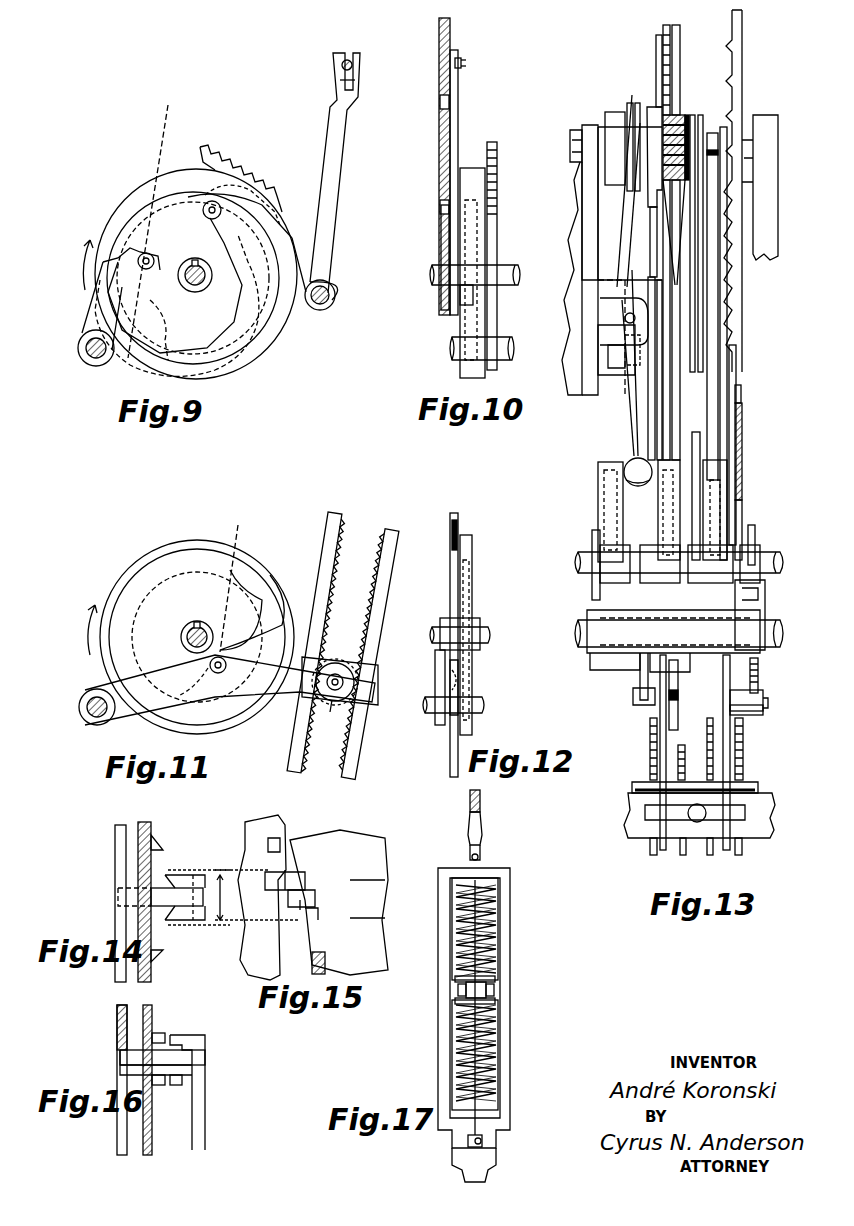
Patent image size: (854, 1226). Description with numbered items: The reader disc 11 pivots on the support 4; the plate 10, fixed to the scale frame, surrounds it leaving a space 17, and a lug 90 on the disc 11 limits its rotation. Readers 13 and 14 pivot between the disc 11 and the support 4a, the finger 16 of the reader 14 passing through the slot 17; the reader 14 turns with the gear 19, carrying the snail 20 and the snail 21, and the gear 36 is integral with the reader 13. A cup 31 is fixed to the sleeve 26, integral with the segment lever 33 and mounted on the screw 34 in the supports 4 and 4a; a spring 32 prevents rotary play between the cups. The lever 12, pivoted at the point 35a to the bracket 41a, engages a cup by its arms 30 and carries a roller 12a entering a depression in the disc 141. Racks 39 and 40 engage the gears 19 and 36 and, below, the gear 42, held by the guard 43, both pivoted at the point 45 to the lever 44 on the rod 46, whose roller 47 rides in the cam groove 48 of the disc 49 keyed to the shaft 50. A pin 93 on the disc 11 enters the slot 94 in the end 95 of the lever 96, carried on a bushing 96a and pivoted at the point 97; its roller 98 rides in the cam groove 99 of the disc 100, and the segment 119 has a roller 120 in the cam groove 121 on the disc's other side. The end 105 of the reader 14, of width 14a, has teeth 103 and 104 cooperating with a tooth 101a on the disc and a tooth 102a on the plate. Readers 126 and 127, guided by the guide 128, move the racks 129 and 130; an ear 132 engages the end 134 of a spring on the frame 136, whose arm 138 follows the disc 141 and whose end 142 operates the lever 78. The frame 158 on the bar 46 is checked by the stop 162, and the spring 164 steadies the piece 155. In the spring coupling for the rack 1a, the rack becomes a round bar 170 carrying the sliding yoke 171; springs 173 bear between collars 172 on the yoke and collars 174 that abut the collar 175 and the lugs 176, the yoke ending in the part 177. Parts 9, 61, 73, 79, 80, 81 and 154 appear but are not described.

In FIG. 17, the rack 1a is at (482, 799).
In FIG. 13, the support 4 is at (766, 120).
In FIG. 13, the support 4a is at (588, 132).
In FIG. 14, the plate 9 is at (116, 850).
In FIG. 16, the plate 9 is at (117, 1022).
In FIG. 10, the plate 10 is at (441, 228).
In FIG. 13, the plate 10 is at (742, 445).
In FIG. 14, the plate 10 is at (140, 872).
In FIG. 15, the plate 10 is at (250, 955).
In FIG. 16, the plate 10 is at (143, 1010).
In FIG. 10, the reader disc 11 is at (440, 77).
In FIG. 13, the reader disc 11 is at (745, 52).
In FIG. 15, the reader disc 11 is at (368, 848).
In FIG. 16, the reader disc 11 is at (143, 1130).
In FIG. 13, the lever 12 is at (634, 438).
In FIG. 13, the roller 12a is at (636, 472).
In FIG. 13, the reader 13 is at (695, 322).
In FIG. 13, the reader 14 is at (704, 301).
In FIG. 15, the reader 14 is at (350, 895).
In FIG. 16, the reader 14 is at (205, 1130).
In FIG. 14, the width 14a is at (230, 897).
In FIG. 14, the finger 16 is at (135, 897).
In FIG. 15, the finger 16 is at (300, 895).
In FIG. 16, the finger 16 is at (135, 1057).
In FIG. 15, the space 17 is at (300, 856).
In FIG. 16, the space 17 is at (140, 1068).
In FIG. 13, the gear 19 is at (668, 120).
In FIG. 13, the snail 20 is at (658, 55).
In FIG. 13, the snail 21 is at (650, 120).
In FIG. 13, the sleeve 26 is at (712, 133).
In FIG. 13, the arms 30 is at (629, 112).
In FIG. 13, the cup 31 is at (612, 118).
In FIG. 13, the spring 32 is at (637, 128).
In FIG. 13, the segment lever 33 is at (722, 410).
In FIG. 13, the screw 34 is at (570, 138).
In FIG. 13, the point 35a is at (626, 316).
In FIG. 13, the gear 36 is at (687, 115).
In FIG. 13, the rack 39 is at (664, 28).
In FIG. 11, the rack 39 is at (394, 528).
In FIG. 12, the rack 39 is at (458, 532).
In FIG. 13, the rack 40 is at (680, 38).
In FIG. 11, the rack 40 is at (334, 514).
In FIG. 12, the rack 40 is at (458, 515).
In FIG. 13, the bracket 41a is at (605, 335).
In FIG. 11, the gear 42 is at (340, 660).
In FIG. 11, the guard 43 is at (378, 690).
In FIG. 12, the guard 43 is at (460, 678).
In FIG. 11, the lever 44 is at (247, 690).
In FIG. 12, the lever 44 is at (437, 662).
In FIG. 11, the point 45 is at (350, 710).
In FIG. 9, the rod 46 is at (88, 338).
In FIG. 10, the rod 46 is at (452, 347).
In FIG. 13, the rod 46 is at (580, 632).
In FIG. 11, the rod 46 is at (88, 715).
In FIG. 12, the rod 46 is at (482, 702).
In FIG. 11, the roller 47 is at (214, 601).
In FIG. 11, the cam groove 48 is at (250, 590).
In FIG. 13, the disc 49 is at (668, 490).
In FIG. 11, the disc 49 is at (135, 572).
In FIG. 12, the disc 49 is at (472, 555).
In FIG. 9, the shaft 50 is at (205, 282).
In FIG. 10, the shaft 50 is at (432, 272).
In FIG. 13, the shaft 50 is at (578, 560).
In FIG. 11, the shaft 50 is at (192, 628).
In FIG. 12, the shaft 50 is at (488, 625).
In FIG. 13, the rod 61 is at (708, 855).
In FIG. 13, the rack 73 is at (758, 672).
In FIG. 13, the lever 78 is at (755, 535).
In FIG. 13, the plate 79 is at (763, 711).
In FIG. 13, the block 80 is at (763, 700).
In FIG. 13, the rod 81 is at (743, 740).
In FIG. 13, the lug 90 is at (740, 392).
In FIG. 9, the pin 93 is at (349, 58).
In FIG. 10, the pin 93 is at (466, 66).
In FIG. 9, the slot 94 is at (342, 70).
In FIG. 9, the end 95 is at (350, 92).
In FIG. 9, the lever 96 is at (242, 226).
In FIG. 10, the lever 96 is at (458, 125).
In FIG. 13, the lever 96 is at (733, 378).
In FIG. 9, the bushing 96a is at (330, 283).
In FIG. 10, the bushing 96a is at (473, 295).
In FIG. 9, the point 97 is at (328, 306).
In FIG. 9, the roller 98 is at (149, 222).
In FIG. 9, the cam groove 99 is at (247, 348).
In FIG. 9, the disc 100 is at (135, 205).
In FIG. 10, the disc 100 is at (470, 180).
In FIG. 13, the disc 100 is at (718, 470).
In FIG. 14, the tooth 101a is at (163, 953).
In FIG. 15, the tooth 101a is at (325, 962).
In FIG. 16, the tooth 101a is at (160, 1085).
In FIG. 14, the tooth 102a is at (163, 850).
In FIG. 15, the tooth 102a is at (272, 840).
In FIG. 16, the tooth 102a is at (158, 1033).
In FIG. 14, the tooth 103 is at (178, 918).
In FIG. 15, the tooth 103 is at (322, 920).
In FIG. 16, the tooth 103 is at (180, 1082).
In FIG. 14, the tooth 104 is at (178, 878).
In FIG. 15, the tooth 104 is at (292, 855).
In FIG. 16, the tooth 104 is at (180, 1037).
In FIG. 14, the end 105 is at (205, 918).
In FIG. 15, the end 105 is at (318, 898).
In FIG. 9, the segment 119 is at (222, 158).
In FIG. 10, the segment 119 is at (497, 196).
In FIG. 13, the segment 119 is at (700, 440).
In FIG. 9, the roller 120 is at (138, 253).
In FIG. 9, the cam groove 121 is at (140, 350).
In FIG. 13, the reader 126 is at (659, 400).
In FIG. 13, the reader 127 is at (650, 388).
In FIG. 13, the guide 128 is at (614, 283).
In FIG. 13, the rack 129 is at (682, 855).
In FIG. 13, the rack 130 is at (650, 855).
In FIG. 13, the ear 132 is at (633, 700).
In FIG. 13, the end 134 is at (640, 684).
In FIG. 13, the frame 136 is at (603, 618).
In FIG. 13, the arm 138 is at (592, 540).
In FIG. 13, the disc 141 is at (600, 516).
In FIG. 13, the end 142 is at (760, 598).
In FIG. 13, the base 154 is at (762, 830).
In FIG. 13, the piece 155 is at (645, 812).
In FIG. 13, the frame 158 is at (660, 738).
In FIG. 13, the stop 162 is at (750, 784).
In FIG. 13, the spring 164 is at (690, 818).
In FIG. 17, the round bar 170 is at (482, 856).
In FIG. 17, the yoke 171 is at (500, 872).
In FIG. 17, the collars 172 is at (470, 880).
In FIG. 17, the springs 173 is at (498, 895).
In FIG. 17, the collars 174 is at (495, 975).
In FIG. 17, the collar 175 is at (468, 1000).
In FIG. 17, the lugs 176 is at (494, 988).
In FIG. 17, the part 177 is at (455, 1165).